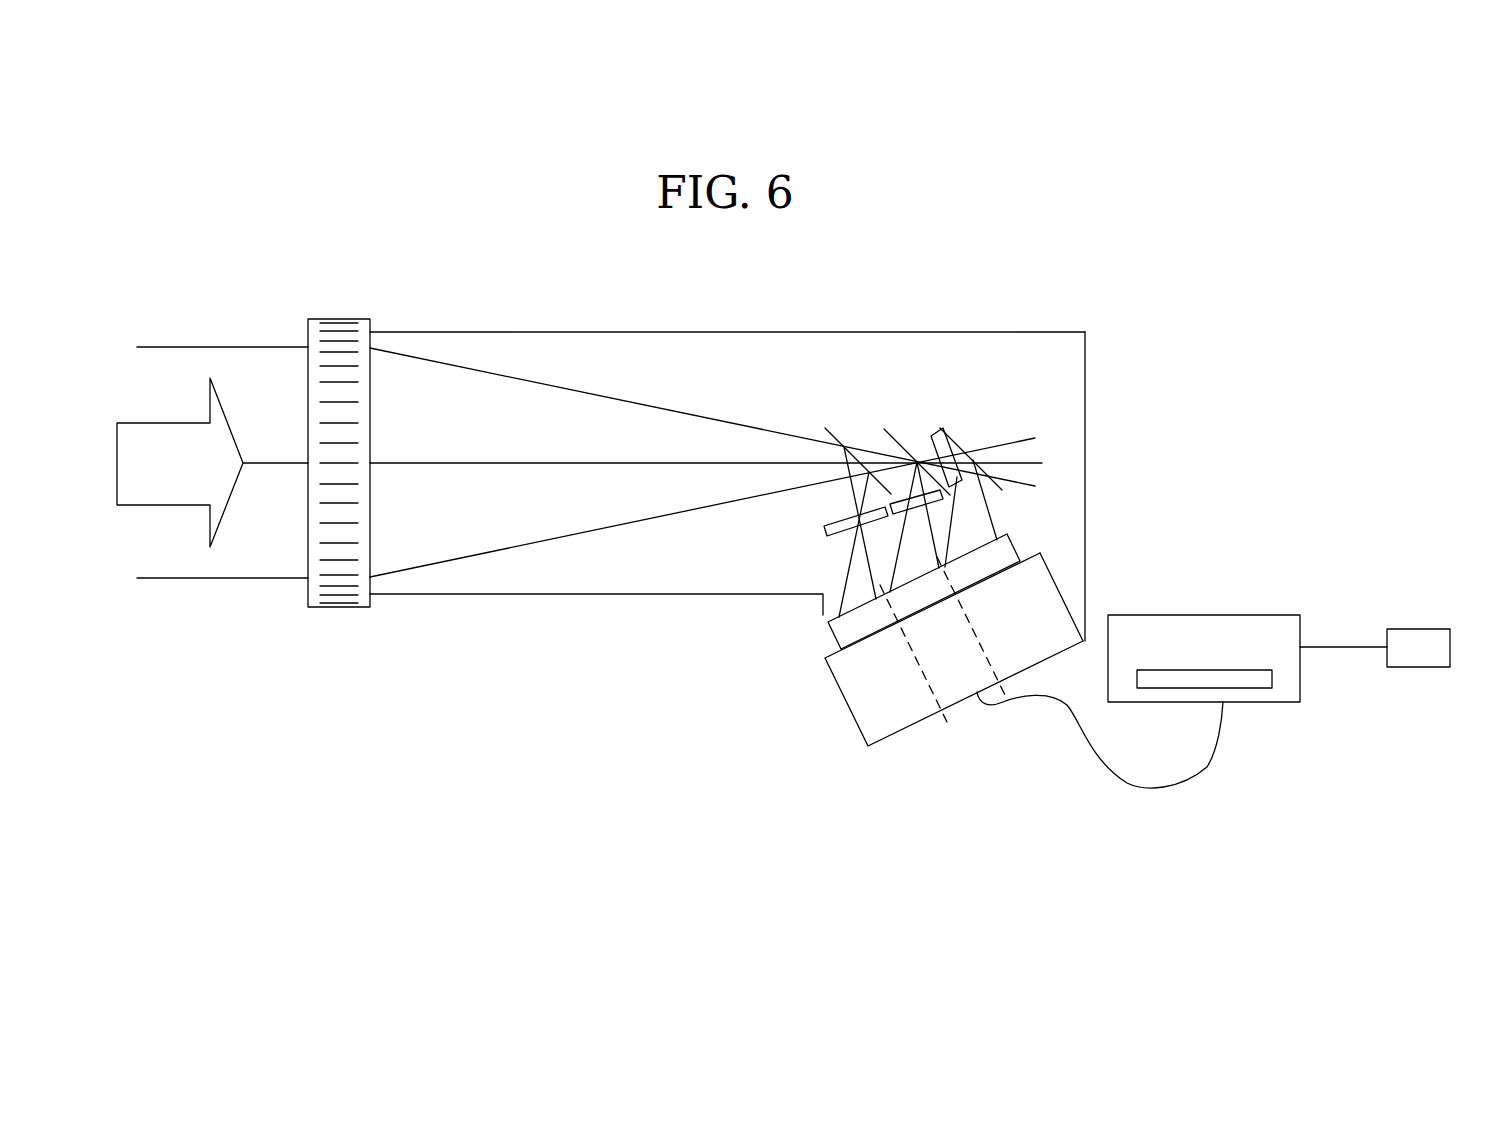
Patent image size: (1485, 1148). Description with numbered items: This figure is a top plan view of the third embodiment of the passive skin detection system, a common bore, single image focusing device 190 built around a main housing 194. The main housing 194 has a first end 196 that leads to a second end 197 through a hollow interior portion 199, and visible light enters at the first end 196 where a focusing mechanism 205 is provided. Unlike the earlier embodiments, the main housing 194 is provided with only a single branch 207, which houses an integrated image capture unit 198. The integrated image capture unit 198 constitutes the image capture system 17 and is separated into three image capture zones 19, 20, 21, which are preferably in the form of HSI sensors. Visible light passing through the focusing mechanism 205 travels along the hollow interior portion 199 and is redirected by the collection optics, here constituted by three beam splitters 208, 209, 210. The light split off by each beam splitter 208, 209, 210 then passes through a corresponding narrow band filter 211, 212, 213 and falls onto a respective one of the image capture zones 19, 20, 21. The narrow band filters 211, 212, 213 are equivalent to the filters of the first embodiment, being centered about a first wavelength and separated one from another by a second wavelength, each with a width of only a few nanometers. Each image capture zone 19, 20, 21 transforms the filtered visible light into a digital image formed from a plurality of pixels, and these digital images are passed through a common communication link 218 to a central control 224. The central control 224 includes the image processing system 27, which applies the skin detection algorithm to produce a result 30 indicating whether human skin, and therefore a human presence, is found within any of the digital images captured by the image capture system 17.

The single image focusing device 190 is at (277, 225).
The main housing 194 is at (423, 331).
The first end 196 is at (382, 597).
The second end 197 is at (1020, 332).
The hollow interior portion 199 is at (643, 353).
The focusing mechanism 205 is at (330, 328).
The beam splitter 208 is at (837, 438).
The beam splitter 209 is at (884, 428).
The beam splitter 210 is at (943, 435).
The narrow band filter 211 is at (823, 522).
The narrow band filter 212 is at (942, 496).
The narrow band filter 213 is at (932, 437).
The image capture system 17 is at (907, 698).
The image capture zone 19 is at (843, 630).
The image capture zone 20 is at (925, 595).
The image capture zone 21 is at (1003, 553).
The integrated image capture unit 198 is at (868, 698).
The single branch 207 is at (823, 613).
The common communication link 218 is at (1067, 706).
The central control 224 is at (1233, 628).
The image processing system 27 is at (1255, 682).
The result 30 is at (1408, 640).